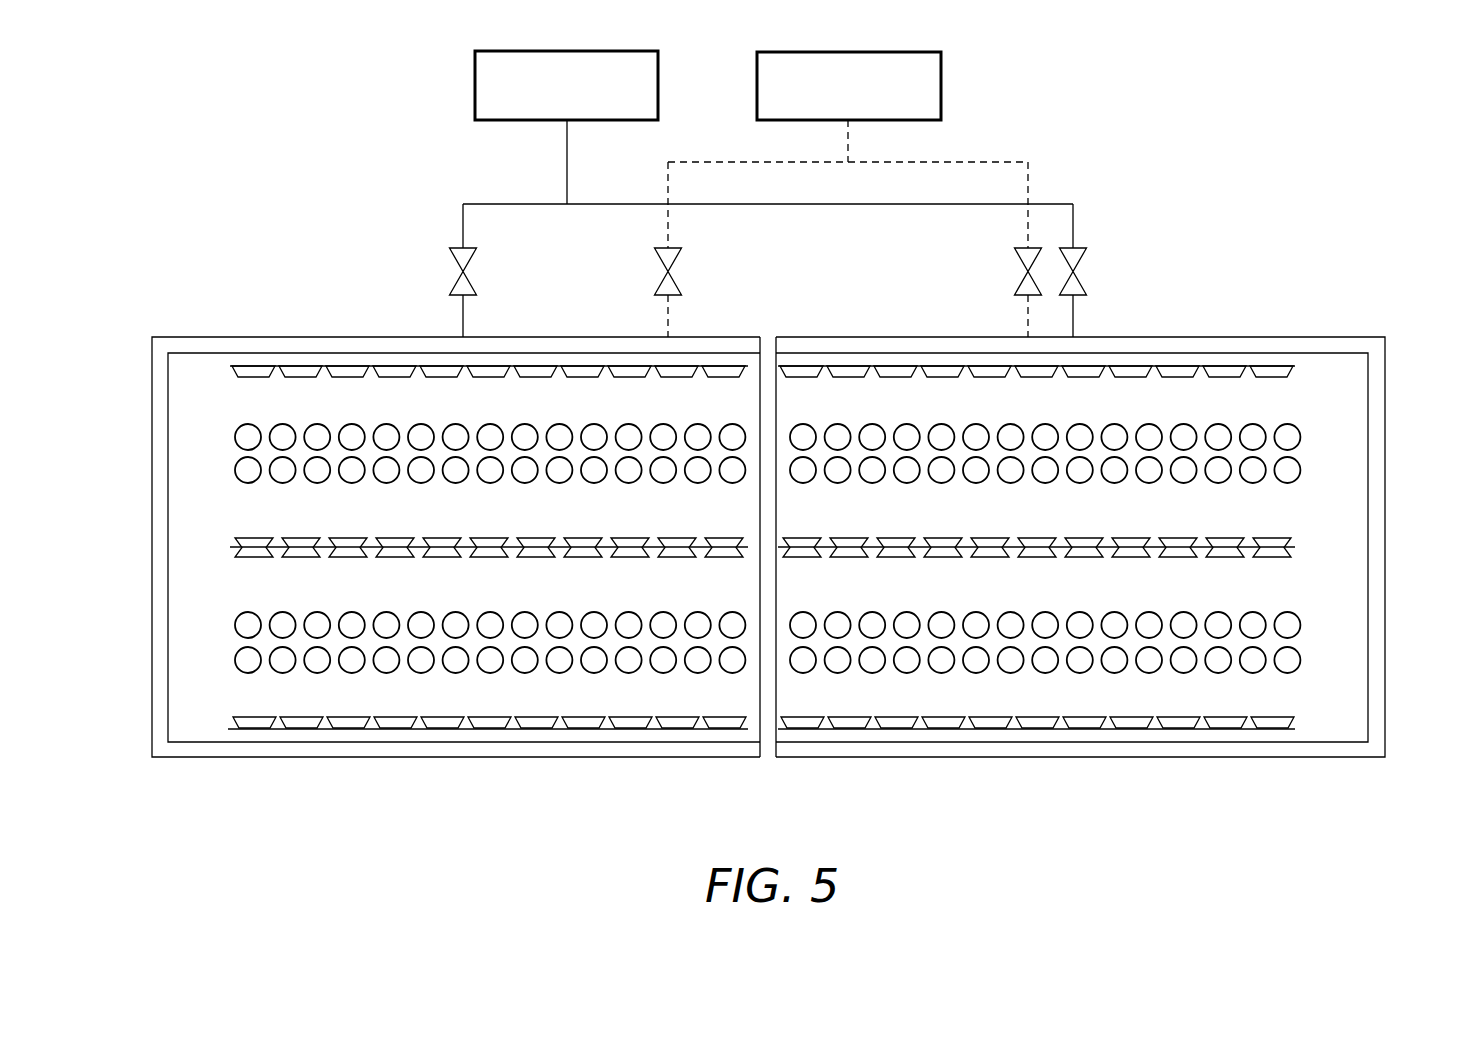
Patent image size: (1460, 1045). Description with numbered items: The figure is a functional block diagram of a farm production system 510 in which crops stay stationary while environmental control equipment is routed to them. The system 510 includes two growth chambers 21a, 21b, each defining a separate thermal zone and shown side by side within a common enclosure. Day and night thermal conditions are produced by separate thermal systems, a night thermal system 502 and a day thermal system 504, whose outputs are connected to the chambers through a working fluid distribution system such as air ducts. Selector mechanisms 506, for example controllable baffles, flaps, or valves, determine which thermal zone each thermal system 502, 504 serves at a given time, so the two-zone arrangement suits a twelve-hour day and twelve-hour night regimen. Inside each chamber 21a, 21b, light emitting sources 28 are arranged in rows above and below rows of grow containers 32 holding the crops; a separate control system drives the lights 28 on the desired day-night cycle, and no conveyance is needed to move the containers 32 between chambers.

The night thermal system 502 is at (475, 83).
The day thermal system 504 is at (943, 92).
The selector mechanism 506 is at (455, 265).
The farm production system 510 is at (1240, 210).
The light emitting sources 28 is at (327, 365).
The grow containers 32 is at (1148, 437).
The growth chamber 21a is at (1325, 375).
The growth chamber 21b is at (210, 718).